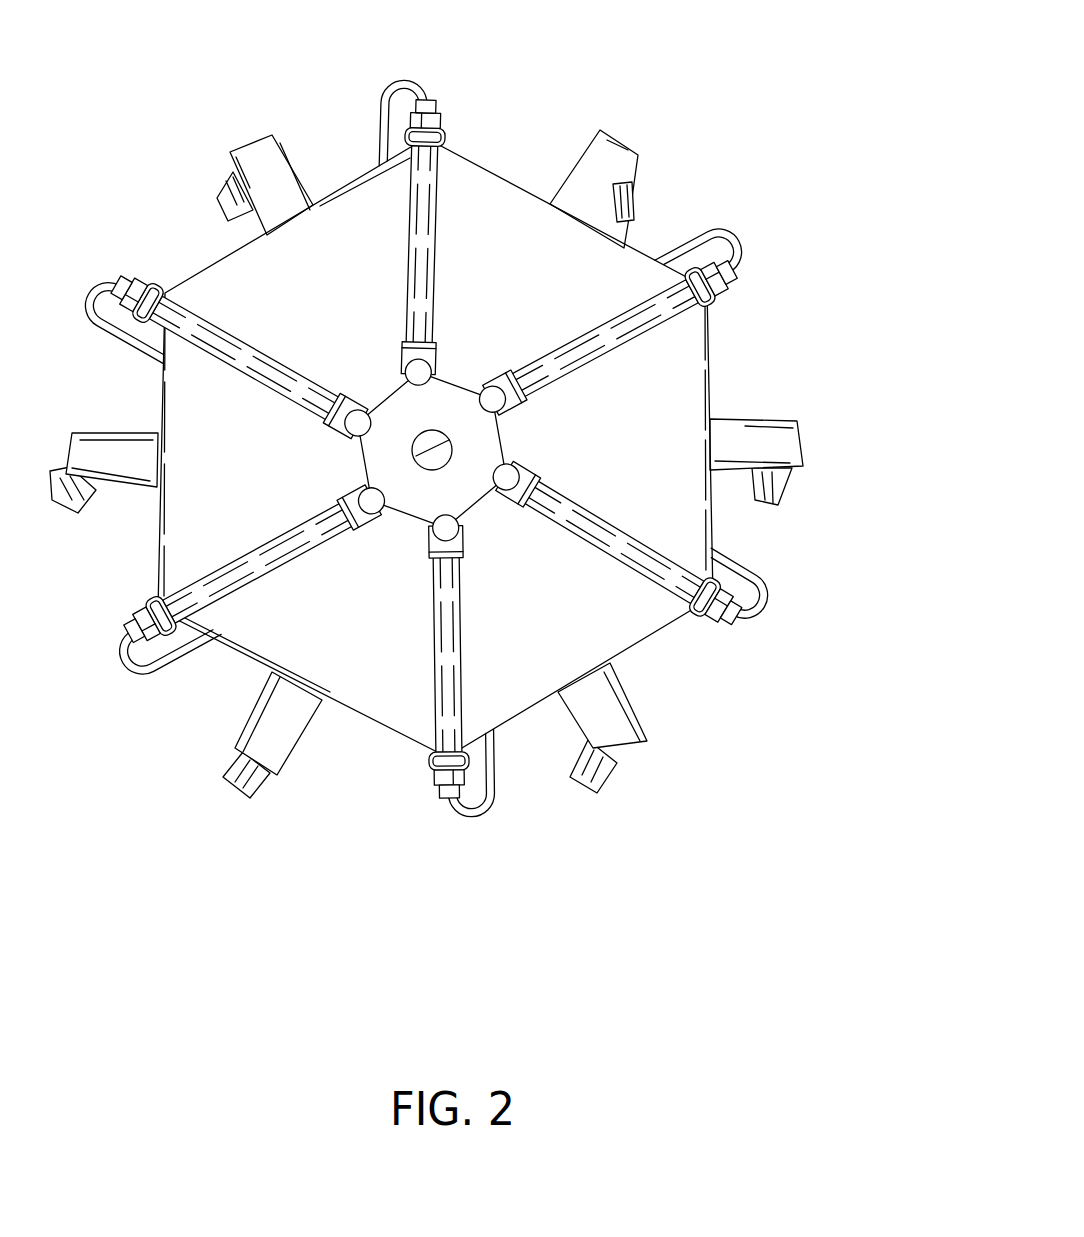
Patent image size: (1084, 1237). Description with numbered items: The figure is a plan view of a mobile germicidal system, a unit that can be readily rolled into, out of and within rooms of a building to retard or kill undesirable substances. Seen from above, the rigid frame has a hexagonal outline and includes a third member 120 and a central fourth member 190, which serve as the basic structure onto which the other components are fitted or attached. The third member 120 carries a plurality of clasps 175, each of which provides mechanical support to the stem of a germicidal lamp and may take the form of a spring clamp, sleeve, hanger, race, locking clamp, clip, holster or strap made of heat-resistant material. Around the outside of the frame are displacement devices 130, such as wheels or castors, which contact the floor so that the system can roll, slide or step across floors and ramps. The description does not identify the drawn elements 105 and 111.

The strut 105 is at (660, 562).
The tab 111 is at (615, 146).
The third member 120 is at (623, 610).
The displacement device 130 is at (630, 193).
The clasp 175 is at (527, 470).
The fourth member 190 is at (478, 445).